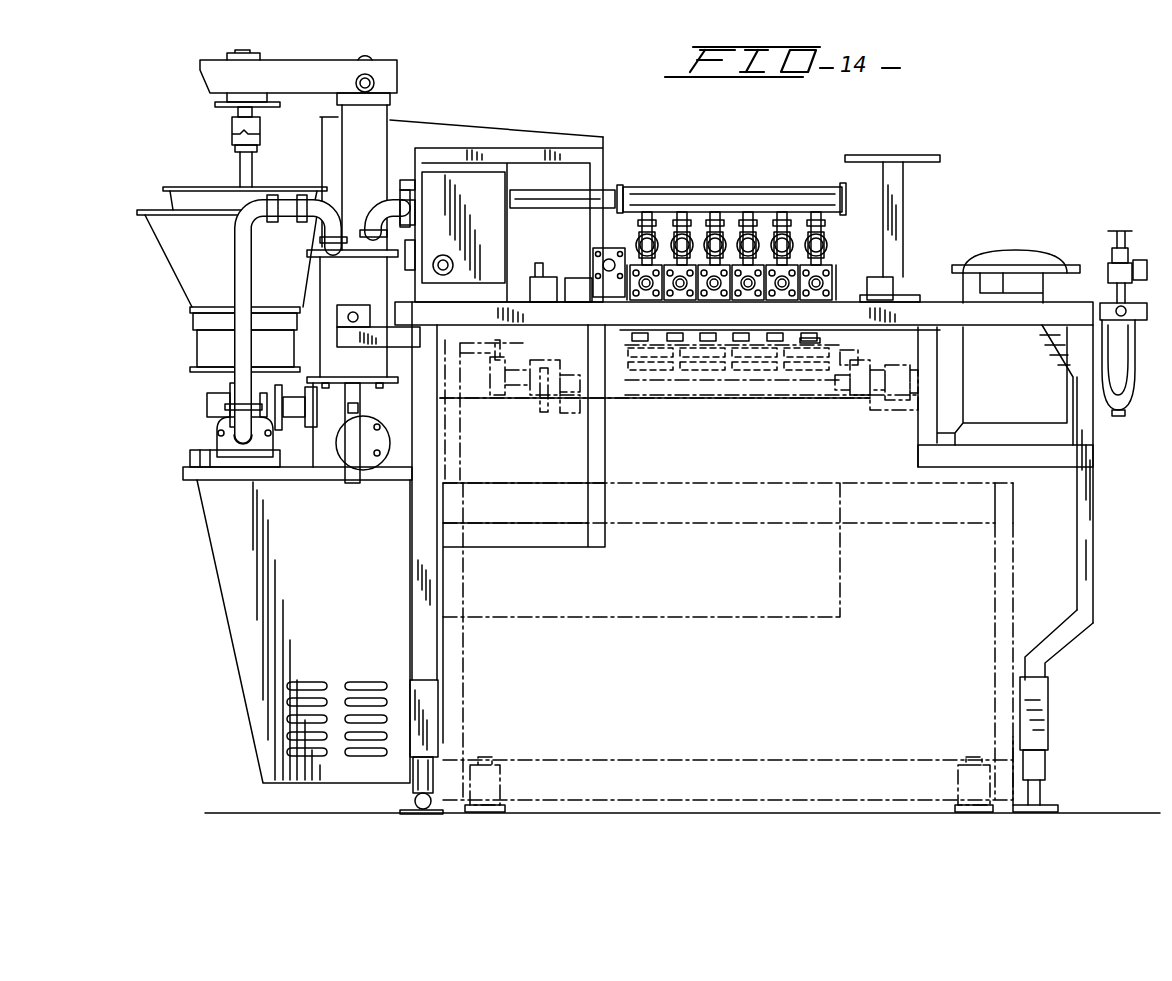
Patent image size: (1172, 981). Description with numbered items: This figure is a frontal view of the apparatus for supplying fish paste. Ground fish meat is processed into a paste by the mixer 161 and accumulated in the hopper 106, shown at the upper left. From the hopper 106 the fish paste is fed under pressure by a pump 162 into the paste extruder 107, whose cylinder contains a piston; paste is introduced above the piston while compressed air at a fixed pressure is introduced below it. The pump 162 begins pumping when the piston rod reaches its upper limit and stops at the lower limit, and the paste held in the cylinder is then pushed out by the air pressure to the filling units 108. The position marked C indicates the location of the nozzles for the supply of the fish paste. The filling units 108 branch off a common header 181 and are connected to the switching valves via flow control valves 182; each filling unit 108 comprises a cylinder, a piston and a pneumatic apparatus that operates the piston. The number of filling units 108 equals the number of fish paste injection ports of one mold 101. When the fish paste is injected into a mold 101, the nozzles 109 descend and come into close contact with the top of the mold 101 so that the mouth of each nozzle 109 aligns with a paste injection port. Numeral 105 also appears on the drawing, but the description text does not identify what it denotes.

The mixer 161 is at (185, 187).
The hopper 106 is at (216, 270).
The paste extruder 107 is at (374, 285).
The pump 162 is at (207, 408).
The common header 181 is at (662, 190).
The location of the nozzles for the supply of the fish paste C is at (773, 172).
The flow control valve 182 is at (825, 243).
The filling unit 108 is at (825, 283).
The mold 101 is at (684, 365).
The frame 105 is at (743, 405).
The nozzle 109 is at (815, 343).